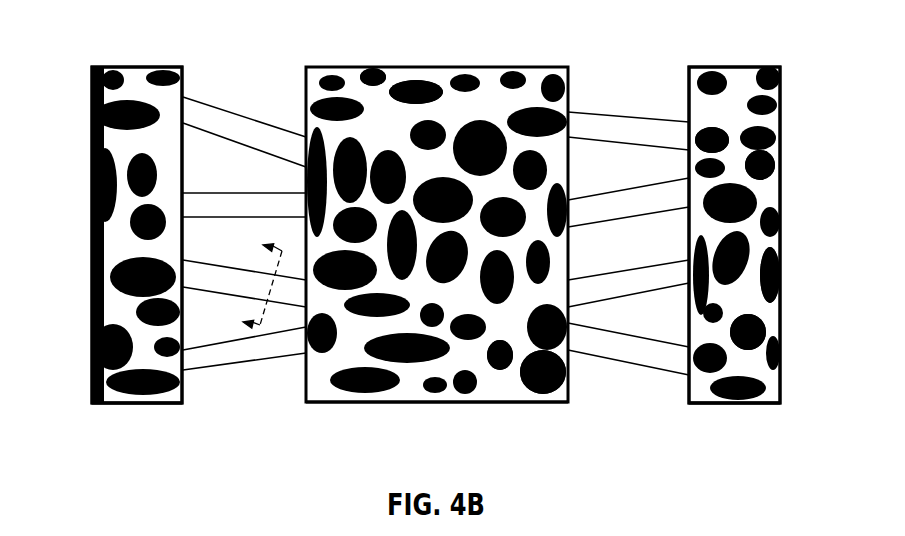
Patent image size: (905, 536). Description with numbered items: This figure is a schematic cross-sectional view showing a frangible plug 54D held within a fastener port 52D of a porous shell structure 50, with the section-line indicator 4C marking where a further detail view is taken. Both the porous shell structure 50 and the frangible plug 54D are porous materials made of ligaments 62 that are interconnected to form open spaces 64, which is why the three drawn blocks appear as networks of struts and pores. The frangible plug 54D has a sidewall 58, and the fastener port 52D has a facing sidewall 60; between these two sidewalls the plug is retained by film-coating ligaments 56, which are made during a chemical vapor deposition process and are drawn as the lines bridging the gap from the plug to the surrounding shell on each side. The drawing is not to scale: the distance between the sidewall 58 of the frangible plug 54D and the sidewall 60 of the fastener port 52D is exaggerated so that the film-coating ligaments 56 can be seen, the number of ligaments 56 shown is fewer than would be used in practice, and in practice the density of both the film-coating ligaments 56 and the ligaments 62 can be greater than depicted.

The porous shell structure 50 is at (90, 235).
The fastener port 52D is at (185, 97).
The frangible plug 54D is at (464, 75).
The film-coating ligaments 56 is at (254, 112).
The sidewall of frangible plug 58 is at (303, 392).
The sidewall of fastener port 60 is at (184, 392).
The ligaments 62 is at (398, 78).
The open spaces 64 is at (366, 69).
The section line 4C is at (242, 280).